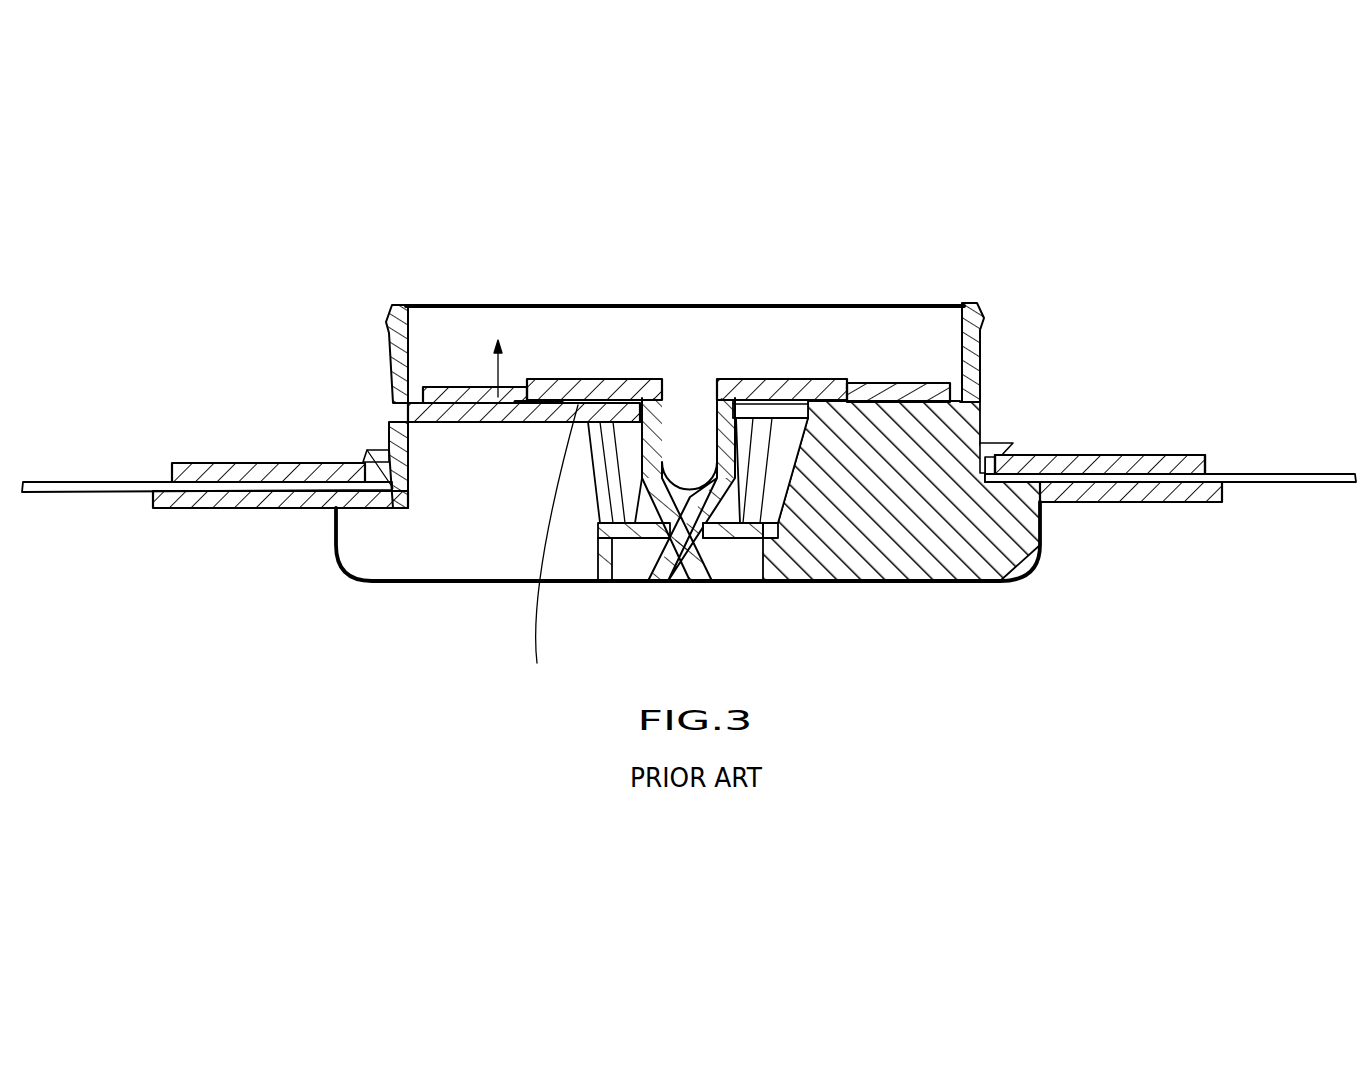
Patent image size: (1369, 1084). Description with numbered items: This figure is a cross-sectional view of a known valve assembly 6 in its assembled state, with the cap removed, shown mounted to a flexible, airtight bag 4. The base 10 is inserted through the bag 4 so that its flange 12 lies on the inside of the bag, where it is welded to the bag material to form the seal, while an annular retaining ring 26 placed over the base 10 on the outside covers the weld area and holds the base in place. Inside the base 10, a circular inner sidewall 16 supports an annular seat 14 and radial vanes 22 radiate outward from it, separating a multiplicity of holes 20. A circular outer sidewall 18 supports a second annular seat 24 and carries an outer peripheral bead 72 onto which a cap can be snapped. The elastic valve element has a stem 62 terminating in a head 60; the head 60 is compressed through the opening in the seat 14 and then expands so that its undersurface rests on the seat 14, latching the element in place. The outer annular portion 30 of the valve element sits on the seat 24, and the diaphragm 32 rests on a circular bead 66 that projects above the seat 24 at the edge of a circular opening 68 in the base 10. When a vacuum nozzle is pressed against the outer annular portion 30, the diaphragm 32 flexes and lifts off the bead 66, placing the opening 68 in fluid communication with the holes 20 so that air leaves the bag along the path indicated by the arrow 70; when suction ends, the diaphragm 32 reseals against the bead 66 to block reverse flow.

The bag 4 is at (53, 488).
The valve assembly 6 is at (1085, 308).
The base 10 is at (362, 358).
The flange 12 is at (180, 500).
The annular seat 14 is at (740, 540).
The inner sidewall 16 is at (617, 565).
The outer sidewall 18 is at (393, 410).
The holes 20 is at (770, 502).
The radial vanes 22 is at (355, 542).
The annular seat 24 is at (488, 418).
The retaining ring 26 is at (207, 463).
The outer annular portion 30 is at (910, 380).
The diaphragm 32 is at (623, 378).
The head 60 is at (703, 558).
The stem 62 is at (765, 398).
The bead 66 is at (578, 400).
The opening 68 is at (710, 242).
The arrow 70 is at (535, 617).
The outer peripheral bead 72 is at (393, 318).